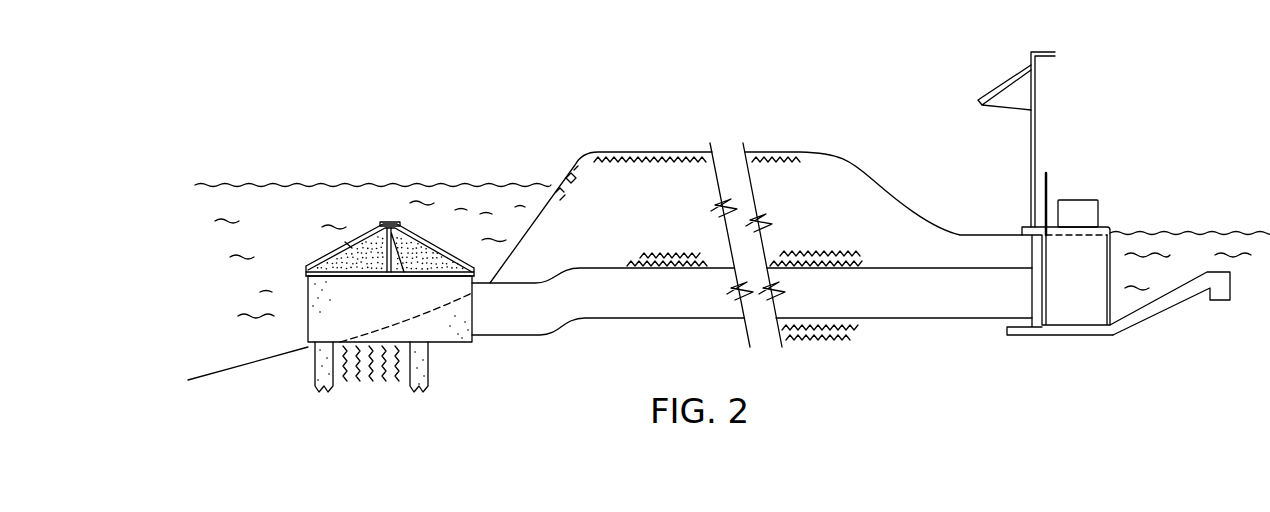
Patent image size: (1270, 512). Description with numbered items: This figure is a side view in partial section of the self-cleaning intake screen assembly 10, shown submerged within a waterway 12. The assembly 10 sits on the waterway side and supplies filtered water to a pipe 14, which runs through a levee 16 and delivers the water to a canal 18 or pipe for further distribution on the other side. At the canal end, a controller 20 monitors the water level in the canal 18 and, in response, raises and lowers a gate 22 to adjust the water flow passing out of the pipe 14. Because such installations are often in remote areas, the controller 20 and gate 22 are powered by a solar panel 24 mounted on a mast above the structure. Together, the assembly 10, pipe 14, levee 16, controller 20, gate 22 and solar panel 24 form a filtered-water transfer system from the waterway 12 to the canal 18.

The self-cleaning intake screen assembly 10 is at (433, 228).
The waterway 12 is at (369, 282).
The pipe 14 is at (642, 320).
The levee 16 is at (792, 170).
The canal 18 is at (1185, 248).
The controller 20 is at (1075, 200).
The gate 22 is at (1110, 297).
The solar panel 24 is at (1000, 85).